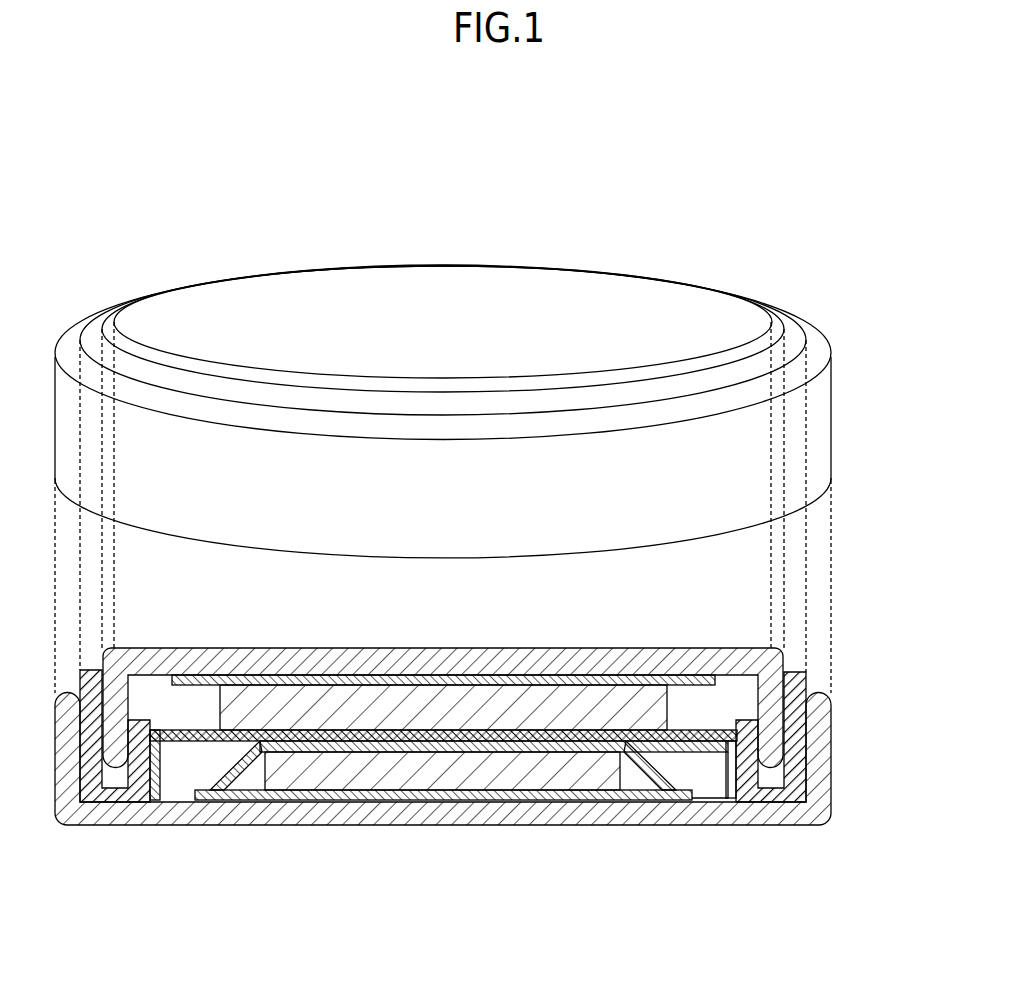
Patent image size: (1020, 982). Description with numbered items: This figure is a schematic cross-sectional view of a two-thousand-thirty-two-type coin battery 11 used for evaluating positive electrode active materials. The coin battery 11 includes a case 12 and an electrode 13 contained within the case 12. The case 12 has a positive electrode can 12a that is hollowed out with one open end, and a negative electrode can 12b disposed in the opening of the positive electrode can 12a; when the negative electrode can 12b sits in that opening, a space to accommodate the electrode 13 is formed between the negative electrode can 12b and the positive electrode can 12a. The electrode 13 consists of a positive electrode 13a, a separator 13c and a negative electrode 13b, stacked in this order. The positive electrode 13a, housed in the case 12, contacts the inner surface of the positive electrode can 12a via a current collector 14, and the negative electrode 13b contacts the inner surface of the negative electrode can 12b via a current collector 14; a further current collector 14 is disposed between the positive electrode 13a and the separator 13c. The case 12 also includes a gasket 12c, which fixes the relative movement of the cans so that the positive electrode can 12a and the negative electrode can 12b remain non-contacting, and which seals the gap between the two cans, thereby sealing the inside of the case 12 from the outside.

The coin battery 11 is at (106, 188).
The case 12 is at (908, 605).
The positive electrode can 12a is at (817, 422).
The negative electrode can 12b is at (605, 290).
The gasket 12c is at (93, 335).
The electrode 13 is at (527, 905).
The positive electrode 13a is at (383, 767).
The negative electrode 13b is at (510, 707).
The separator 13c is at (445, 741).
The current collector 14 is at (193, 685).